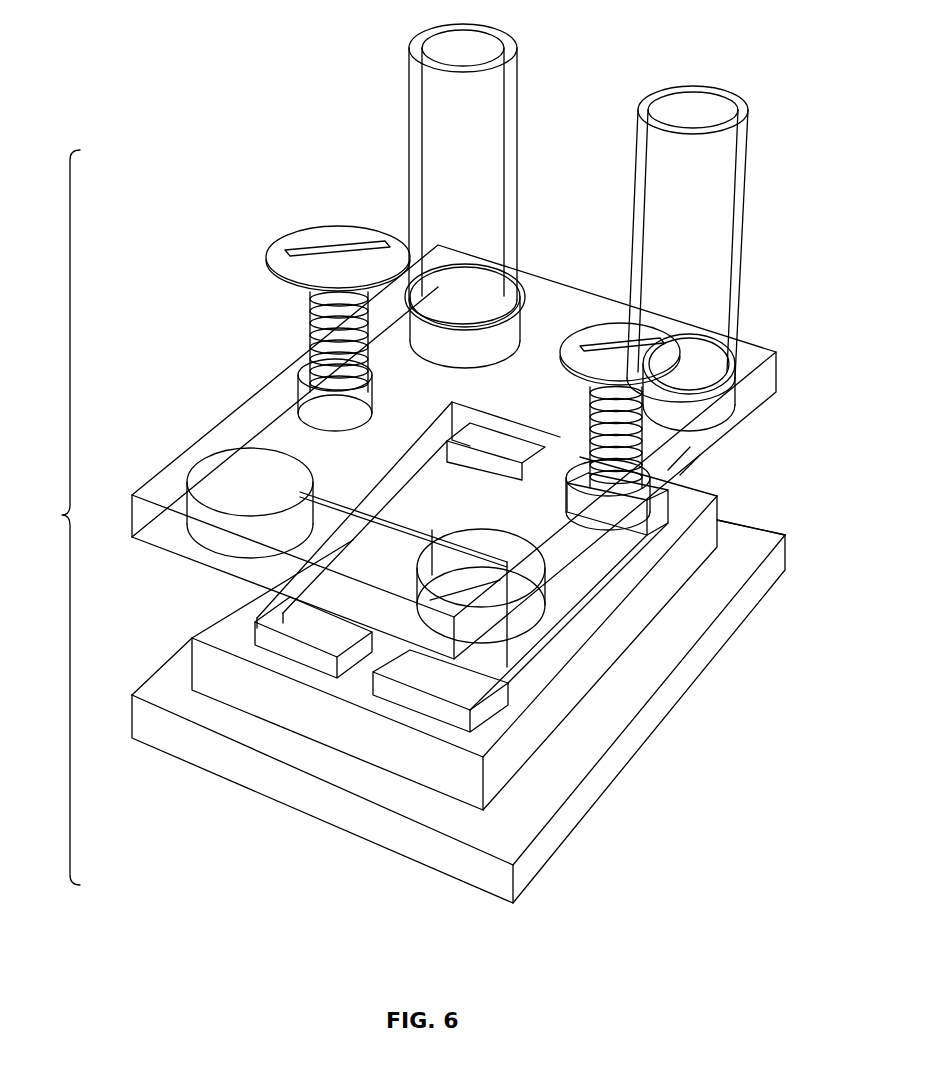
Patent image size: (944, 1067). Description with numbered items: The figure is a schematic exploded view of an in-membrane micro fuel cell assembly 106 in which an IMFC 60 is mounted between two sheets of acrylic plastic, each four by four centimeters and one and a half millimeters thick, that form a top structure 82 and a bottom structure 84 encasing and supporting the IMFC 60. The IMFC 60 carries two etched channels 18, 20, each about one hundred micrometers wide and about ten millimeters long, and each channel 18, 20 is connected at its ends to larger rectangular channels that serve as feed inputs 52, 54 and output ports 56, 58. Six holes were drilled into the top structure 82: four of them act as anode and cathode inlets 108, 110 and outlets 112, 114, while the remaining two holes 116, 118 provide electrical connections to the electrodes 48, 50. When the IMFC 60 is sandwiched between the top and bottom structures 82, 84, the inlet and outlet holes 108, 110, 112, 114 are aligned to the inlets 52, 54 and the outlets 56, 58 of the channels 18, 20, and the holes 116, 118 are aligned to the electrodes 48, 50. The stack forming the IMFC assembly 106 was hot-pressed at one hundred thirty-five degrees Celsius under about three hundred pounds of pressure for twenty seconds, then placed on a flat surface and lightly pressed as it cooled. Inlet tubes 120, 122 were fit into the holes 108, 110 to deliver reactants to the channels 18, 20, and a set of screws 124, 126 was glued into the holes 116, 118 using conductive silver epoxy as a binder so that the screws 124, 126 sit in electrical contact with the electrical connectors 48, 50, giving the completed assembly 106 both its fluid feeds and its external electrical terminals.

The IMFC assembly 106 is at (46, 517).
The top structure 82 is at (777, 382).
The bottom structure 84 is at (740, 620).
The inlet tube 120 is at (513, 43).
The inlet tube 122 is at (740, 103).
The screw 124 is at (300, 225).
The screw 126 is at (670, 352).
The inlet hole 108 is at (522, 292).
The inlet hole 110 is at (733, 360).
The outlet hole 112 is at (213, 470).
The electrical connection hole 116 is at (307, 367).
The electrical connection hole 118 is at (653, 497).
The feed input port 52 is at (487, 437).
The channel 18 is at (483, 503).
The channel 20 is at (547, 503).
The electrode 48 is at (370, 508).
The electrode 50 is at (505, 592).
The feed input port 54 is at (717, 513).
The output port 56 is at (270, 618).
The output port 58 is at (455, 695).
The IMFC 60 is at (790, 550).
The outlet hole 114 is at (575, 615).